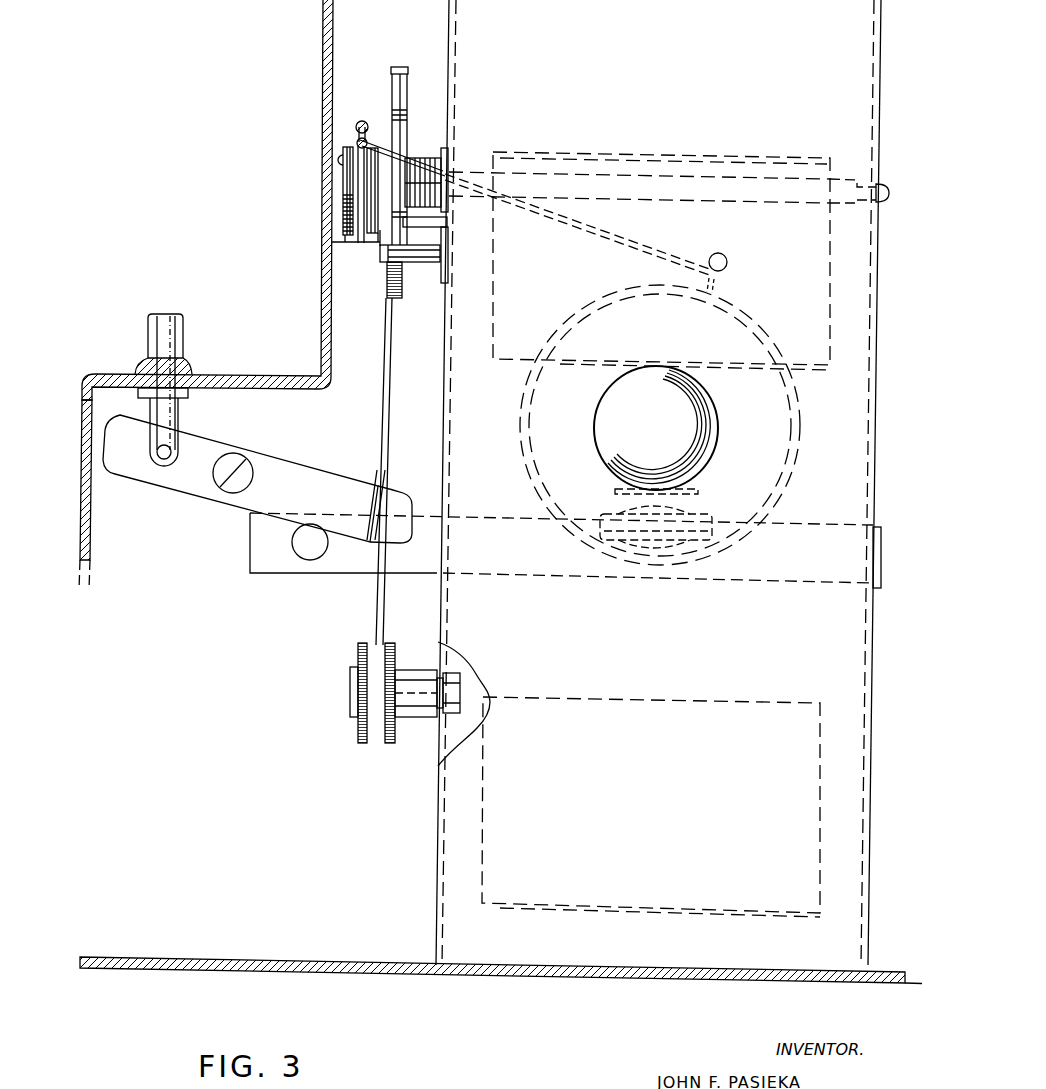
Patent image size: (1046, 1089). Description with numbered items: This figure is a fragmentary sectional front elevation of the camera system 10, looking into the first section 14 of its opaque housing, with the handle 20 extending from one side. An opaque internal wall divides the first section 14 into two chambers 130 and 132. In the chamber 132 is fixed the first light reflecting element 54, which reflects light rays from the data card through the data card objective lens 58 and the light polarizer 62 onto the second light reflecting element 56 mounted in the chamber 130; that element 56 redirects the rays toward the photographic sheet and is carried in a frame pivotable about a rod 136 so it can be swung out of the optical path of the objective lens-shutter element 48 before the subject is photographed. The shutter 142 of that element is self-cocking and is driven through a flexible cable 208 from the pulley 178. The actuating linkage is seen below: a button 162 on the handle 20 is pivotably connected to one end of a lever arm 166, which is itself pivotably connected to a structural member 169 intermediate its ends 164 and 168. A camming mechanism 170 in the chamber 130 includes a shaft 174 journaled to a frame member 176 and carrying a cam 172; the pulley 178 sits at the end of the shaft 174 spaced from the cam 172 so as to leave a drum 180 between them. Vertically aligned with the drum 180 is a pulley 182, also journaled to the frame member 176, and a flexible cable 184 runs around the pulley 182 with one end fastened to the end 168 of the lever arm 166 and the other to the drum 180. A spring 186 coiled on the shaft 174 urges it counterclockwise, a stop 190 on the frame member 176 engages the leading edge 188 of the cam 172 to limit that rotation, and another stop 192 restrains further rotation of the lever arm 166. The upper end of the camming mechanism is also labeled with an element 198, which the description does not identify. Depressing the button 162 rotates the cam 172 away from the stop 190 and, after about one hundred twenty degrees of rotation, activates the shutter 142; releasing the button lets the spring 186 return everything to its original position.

The camera system 10 is at (258, 166).
The first section 14 is at (321, 118).
The handle 20 is at (82, 412).
The objective lens-shutter element 48 is at (693, 430).
The first light reflecting element 54 is at (601, 727).
The second light reflecting element 56 is at (510, 345).
The objective lens 58 is at (692, 516).
The light polarizer 62 is at (700, 490).
The chamber 130 is at (830, 487).
The chamber 132 is at (757, 630).
The rod 136 is at (845, 183).
The shutter 142 is at (738, 311).
The button 162 is at (184, 322).
The end of lever arm 164 is at (125, 471).
The lever arm 166 is at (297, 460).
The end of lever arm 168 is at (378, 490).
The structural member 169 is at (252, 423).
The camming mechanism 170 is at (413, 112).
The cam 172 is at (396, 100).
The shaft 174 is at (436, 168).
The frame member 176 is at (442, 395).
The pulley 178 is at (345, 175).
The drum 180 is at (332, 242).
The pulley 182 is at (358, 740).
The flexible cable 184 is at (392, 372).
The spring 186 is at (425, 158).
The leading edge 188 is at (402, 290).
The stop 190 is at (384, 250).
The stop 192 is at (318, 560).
The knob 198 is at (399, 66).
The flexible cable 208 is at (622, 242).